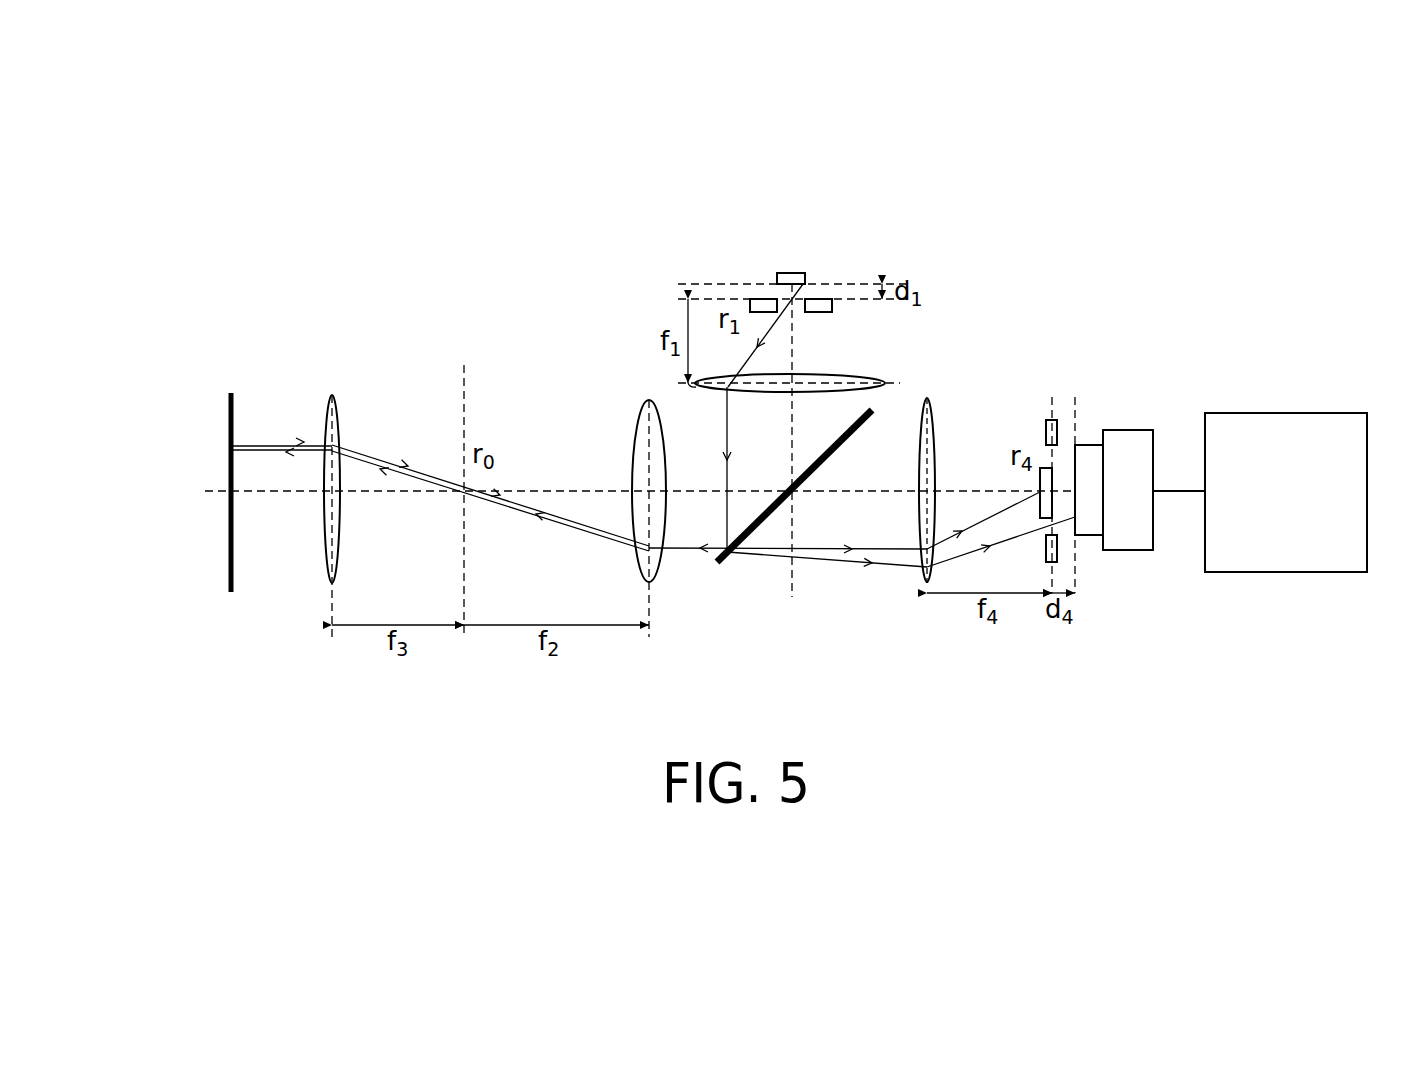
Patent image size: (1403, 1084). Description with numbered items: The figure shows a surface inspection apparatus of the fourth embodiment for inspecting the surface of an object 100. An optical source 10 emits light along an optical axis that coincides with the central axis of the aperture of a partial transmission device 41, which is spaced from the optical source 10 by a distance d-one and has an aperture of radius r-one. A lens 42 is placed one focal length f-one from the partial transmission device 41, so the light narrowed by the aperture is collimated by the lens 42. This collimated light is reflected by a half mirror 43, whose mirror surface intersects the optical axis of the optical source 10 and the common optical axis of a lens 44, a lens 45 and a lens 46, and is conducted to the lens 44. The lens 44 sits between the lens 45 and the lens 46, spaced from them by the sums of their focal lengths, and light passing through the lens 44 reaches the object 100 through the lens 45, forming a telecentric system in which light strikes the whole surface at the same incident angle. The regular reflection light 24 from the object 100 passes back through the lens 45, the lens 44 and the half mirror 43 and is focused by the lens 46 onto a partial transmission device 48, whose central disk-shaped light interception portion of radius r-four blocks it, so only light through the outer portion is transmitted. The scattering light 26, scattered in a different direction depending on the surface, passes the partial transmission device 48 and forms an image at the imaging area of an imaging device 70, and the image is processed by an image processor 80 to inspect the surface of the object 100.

The optical source 10 is at (792, 273).
The regular reflection light 24 is at (1000, 508).
The scattering light 26 is at (270, 445).
The partial transmission device 41 is at (762, 299).
The lens 42 is at (862, 378).
The half mirror 43 is at (844, 437).
The lens 44 is at (657, 565).
The lens 45 is at (322, 562).
The lens 46 is at (920, 575).
The partial transmission device 48 is at (1045, 428).
The imaging device 70 is at (1127, 430).
The image processor 80 is at (1236, 413).
The object 100 is at (230, 563).